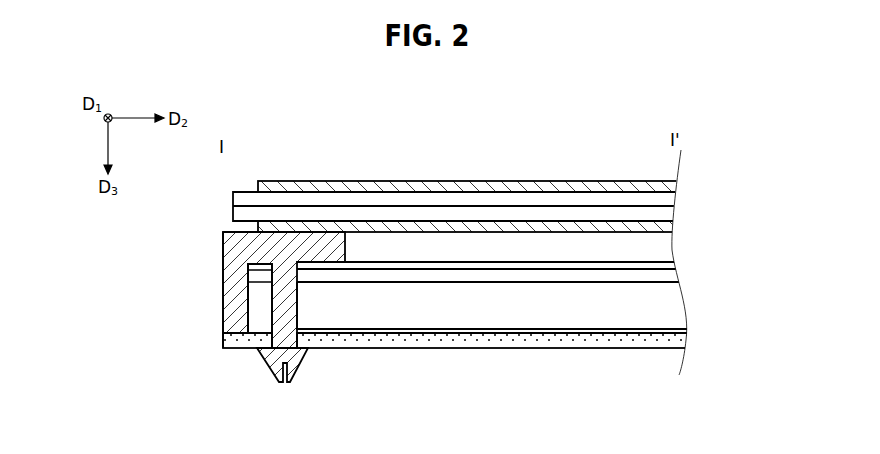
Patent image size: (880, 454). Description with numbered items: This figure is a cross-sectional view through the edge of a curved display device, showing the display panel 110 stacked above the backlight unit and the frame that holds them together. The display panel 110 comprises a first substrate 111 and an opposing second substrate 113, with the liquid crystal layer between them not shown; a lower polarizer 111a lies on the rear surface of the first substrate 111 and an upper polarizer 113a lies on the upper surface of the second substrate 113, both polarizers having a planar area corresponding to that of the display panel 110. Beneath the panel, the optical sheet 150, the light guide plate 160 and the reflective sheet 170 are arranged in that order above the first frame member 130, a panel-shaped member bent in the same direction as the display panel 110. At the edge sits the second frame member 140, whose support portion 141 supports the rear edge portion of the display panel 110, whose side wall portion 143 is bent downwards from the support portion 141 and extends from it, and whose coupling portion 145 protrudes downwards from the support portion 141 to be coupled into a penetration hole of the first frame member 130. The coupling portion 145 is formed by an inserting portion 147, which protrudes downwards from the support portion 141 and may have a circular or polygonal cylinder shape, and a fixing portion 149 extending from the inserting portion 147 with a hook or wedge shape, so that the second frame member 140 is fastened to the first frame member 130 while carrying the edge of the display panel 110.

The display panel 110 is at (524, 193).
The first substrate 111 is at (658, 214).
The lower polarizer 111a is at (663, 227).
The second substrate 113 is at (658, 200).
The upper polarizer 113a is at (671, 190).
The first frame member 130 is at (675, 340).
The second frame member 140 is at (195, 307).
The support portion 141 is at (270, 248).
The side wall portion 143 is at (235, 287).
The coupling portion 145 is at (207, 323).
The inserting portion 147 is at (283, 310).
The fixing portion 149 is at (273, 358).
The optical sheet 150 is at (660, 275).
The light guide plate 160 is at (668, 305).
The reflective sheet 170 is at (672, 329).